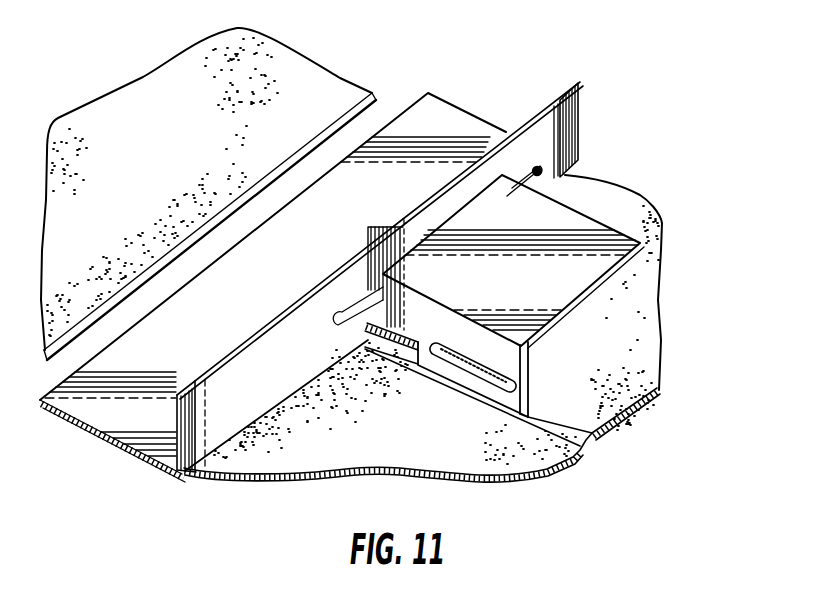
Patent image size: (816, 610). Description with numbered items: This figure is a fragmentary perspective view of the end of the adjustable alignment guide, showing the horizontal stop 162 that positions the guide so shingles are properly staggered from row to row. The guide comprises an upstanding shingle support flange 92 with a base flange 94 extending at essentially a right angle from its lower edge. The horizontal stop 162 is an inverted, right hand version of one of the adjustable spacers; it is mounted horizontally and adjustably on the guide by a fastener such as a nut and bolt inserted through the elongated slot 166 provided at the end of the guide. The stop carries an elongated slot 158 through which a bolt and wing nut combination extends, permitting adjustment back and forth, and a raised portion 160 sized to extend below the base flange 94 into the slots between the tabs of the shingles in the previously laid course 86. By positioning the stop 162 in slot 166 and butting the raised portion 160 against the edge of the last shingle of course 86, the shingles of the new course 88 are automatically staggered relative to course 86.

The course 86 is at (523, 457).
The fourth course 88 is at (362, 86).
The shingle support flange 92 is at (565, 132).
The base flange 94 is at (103, 417).
The elongated slot 158 is at (518, 369).
The raised portion 160 is at (460, 378).
The horizontal stop 162 is at (563, 229).
The elongated slot 166 is at (538, 163).